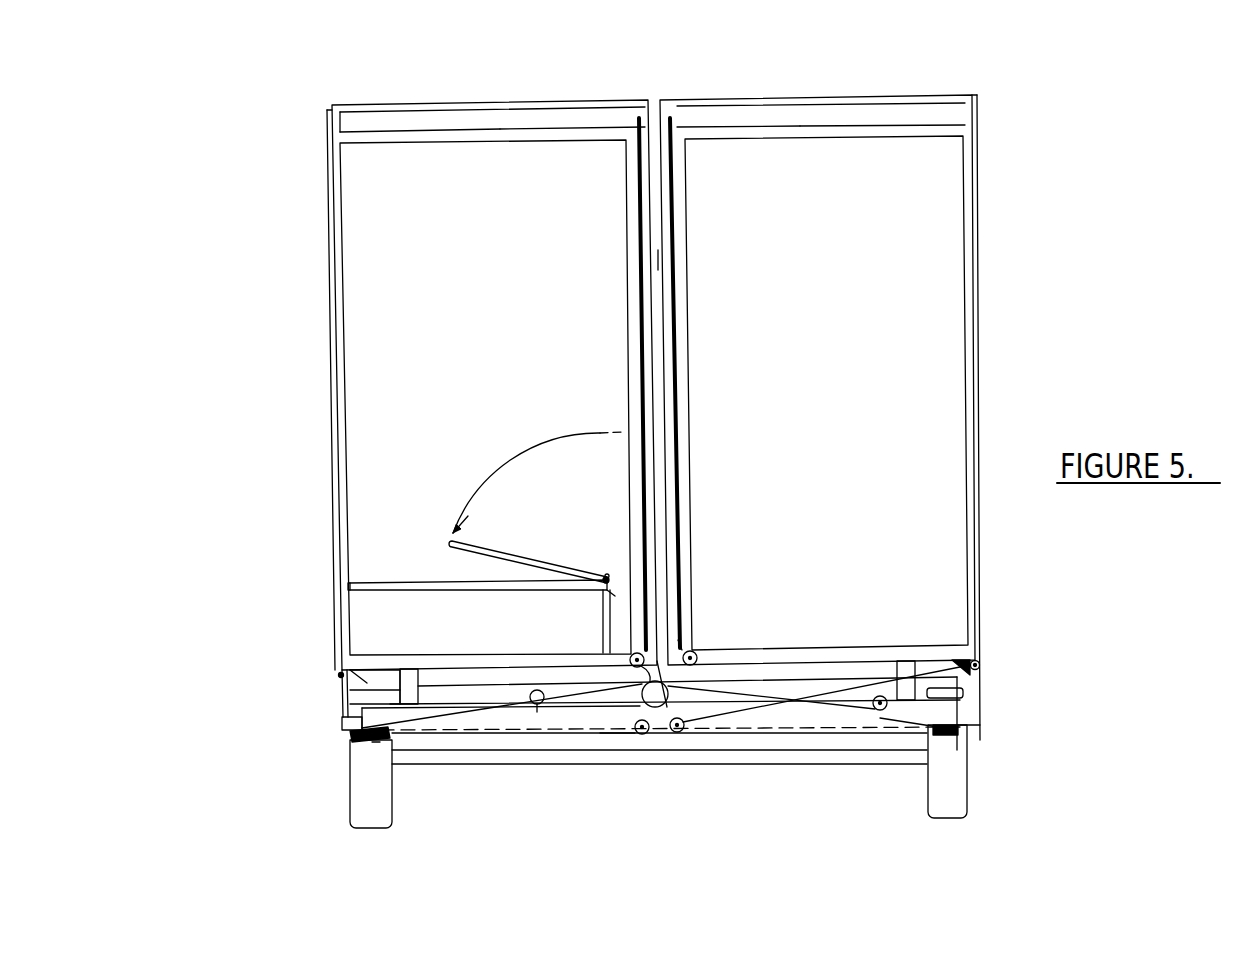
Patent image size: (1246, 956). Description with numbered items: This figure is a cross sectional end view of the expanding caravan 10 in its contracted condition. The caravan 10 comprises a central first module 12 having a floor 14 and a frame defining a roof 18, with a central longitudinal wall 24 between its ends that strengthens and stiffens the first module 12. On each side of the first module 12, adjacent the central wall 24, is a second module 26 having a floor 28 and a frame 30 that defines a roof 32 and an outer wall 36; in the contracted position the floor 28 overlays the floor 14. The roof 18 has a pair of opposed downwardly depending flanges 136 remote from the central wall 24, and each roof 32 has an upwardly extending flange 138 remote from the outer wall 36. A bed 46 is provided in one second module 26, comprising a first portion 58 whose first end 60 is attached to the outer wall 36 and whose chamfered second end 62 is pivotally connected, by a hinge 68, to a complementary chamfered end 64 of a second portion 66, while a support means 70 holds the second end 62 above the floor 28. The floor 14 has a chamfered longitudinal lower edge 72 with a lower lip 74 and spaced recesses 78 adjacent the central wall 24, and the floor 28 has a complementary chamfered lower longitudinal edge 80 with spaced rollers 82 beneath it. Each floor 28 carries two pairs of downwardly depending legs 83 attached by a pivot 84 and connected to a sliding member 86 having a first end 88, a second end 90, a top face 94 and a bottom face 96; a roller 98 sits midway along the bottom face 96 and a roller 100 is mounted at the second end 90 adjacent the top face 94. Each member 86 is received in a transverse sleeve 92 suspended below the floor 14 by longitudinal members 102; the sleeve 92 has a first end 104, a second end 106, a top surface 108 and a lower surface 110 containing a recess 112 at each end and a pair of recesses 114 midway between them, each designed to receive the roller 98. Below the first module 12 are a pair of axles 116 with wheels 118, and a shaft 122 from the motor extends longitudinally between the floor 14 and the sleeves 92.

The expanding caravan 10 is at (140, 110).
The central first module 12 is at (578, 98).
The floor 14 is at (932, 664).
The roof 18 is at (372, 102).
The central longitudinal wall 24 is at (654, 264).
The second module 26 is at (484, 126).
The floor 28 is at (782, 660).
The frame 30 is at (862, 120).
The roof 32 is at (437, 126).
The outer wall 36 is at (330, 354).
The bed 46 is at (414, 580).
The first portion 58 is at (366, 597).
The first end 60 is at (358, 582).
The second end 62 is at (560, 590).
The chamfered end 64 is at (605, 578).
The second portion 66 is at (490, 548).
The hinge 68 is at (607, 577).
The support means 70 is at (612, 597).
The chamfered longitudinal lower edge 72 is at (978, 660).
The lower lip 74 is at (986, 672).
The recesses 78 is at (696, 653).
The chamfered lower longitudinal edge 80 is at (672, 736).
The rollers 82 is at (695, 650).
The legs 83 is at (340, 697).
The pivot 84 is at (340, 675).
The sliding member 86 is at (342, 714).
The first end 88 is at (348, 743).
The second end 90 is at (890, 732).
The transverse sleeve 92 is at (422, 744).
The top face 94 is at (541, 706).
The bottom face 96 is at (575, 765).
The roller 98 is at (640, 740).
The roller 100 is at (842, 736).
The longitudinal members 102 is at (412, 670).
The first end 104 is at (370, 752).
The second end 106 is at (910, 740).
The top surface 108 is at (706, 732).
The lower surface 110 is at (776, 736).
The recess 112 is at (374, 746).
The recesses 114 is at (627, 737).
The axles 116 is at (495, 757).
The wheels 118 is at (383, 814).
The shaft 122 is at (644, 682).
The flanges 136 is at (332, 120).
The flange 138 is at (639, 127).